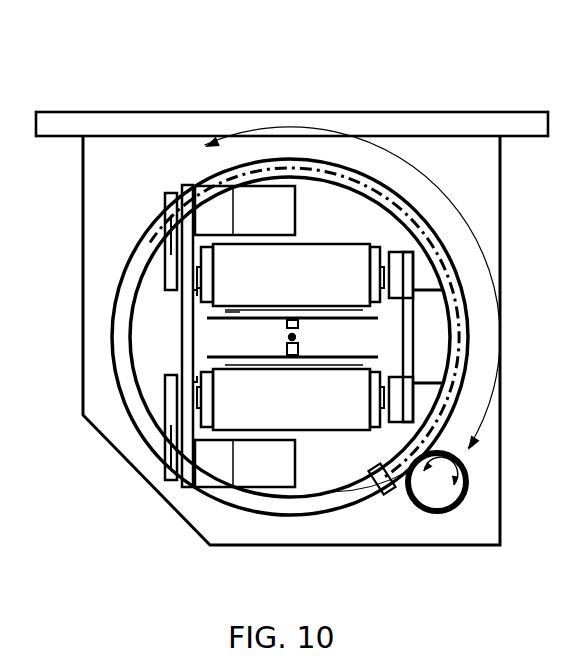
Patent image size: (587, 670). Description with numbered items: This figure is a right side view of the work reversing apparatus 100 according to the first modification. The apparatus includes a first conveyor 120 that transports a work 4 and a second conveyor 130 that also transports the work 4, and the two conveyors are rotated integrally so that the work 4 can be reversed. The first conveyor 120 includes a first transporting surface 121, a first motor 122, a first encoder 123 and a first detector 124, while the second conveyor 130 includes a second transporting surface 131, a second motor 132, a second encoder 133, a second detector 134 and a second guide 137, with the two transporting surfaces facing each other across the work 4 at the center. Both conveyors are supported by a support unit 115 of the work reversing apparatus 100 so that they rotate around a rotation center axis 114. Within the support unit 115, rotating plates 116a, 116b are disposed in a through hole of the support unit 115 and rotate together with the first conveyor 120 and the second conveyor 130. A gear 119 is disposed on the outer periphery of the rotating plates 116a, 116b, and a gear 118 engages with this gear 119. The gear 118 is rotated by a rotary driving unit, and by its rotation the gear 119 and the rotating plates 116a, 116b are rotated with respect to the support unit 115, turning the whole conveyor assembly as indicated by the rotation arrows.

The work reversing apparatus 100 is at (100, 88).
The support unit 115 is at (170, 117).
The second conveyor 130 is at (366, 228).
The first transporting surface 121 is at (228, 364).
The rotating plate 116b is at (168, 262).
The rotating plate 116a is at (185, 432).
The second motor 132 is at (256, 146).
The second encoder 133 is at (258, 196).
The first motor 122 is at (257, 514).
The first encoder 123 is at (245, 470).
The second transporting surface 131 is at (210, 309).
The second guide 137 is at (372, 317).
The second detector 134 is at (300, 325).
The first detector 124 is at (300, 349).
The rotation center axis 114 is at (291, 337).
The work 4 is at (233, 322).
The gear 119 is at (388, 466).
The gear 118 is at (466, 482).
The first conveyor 120 is at (388, 458).